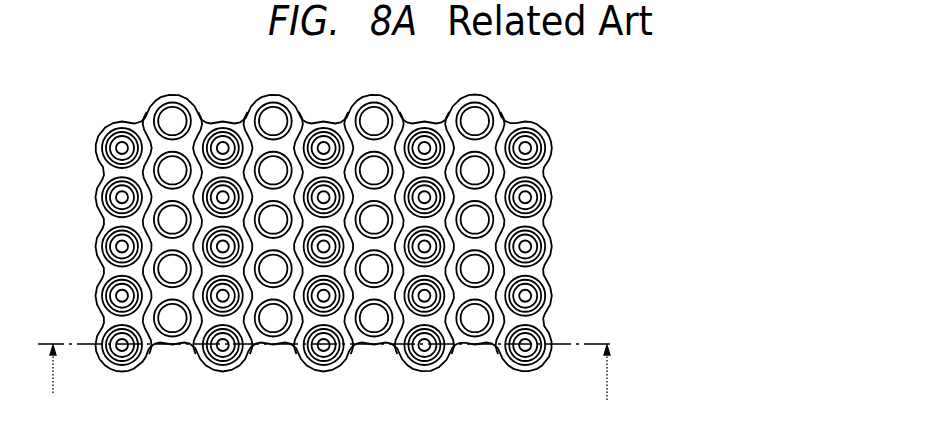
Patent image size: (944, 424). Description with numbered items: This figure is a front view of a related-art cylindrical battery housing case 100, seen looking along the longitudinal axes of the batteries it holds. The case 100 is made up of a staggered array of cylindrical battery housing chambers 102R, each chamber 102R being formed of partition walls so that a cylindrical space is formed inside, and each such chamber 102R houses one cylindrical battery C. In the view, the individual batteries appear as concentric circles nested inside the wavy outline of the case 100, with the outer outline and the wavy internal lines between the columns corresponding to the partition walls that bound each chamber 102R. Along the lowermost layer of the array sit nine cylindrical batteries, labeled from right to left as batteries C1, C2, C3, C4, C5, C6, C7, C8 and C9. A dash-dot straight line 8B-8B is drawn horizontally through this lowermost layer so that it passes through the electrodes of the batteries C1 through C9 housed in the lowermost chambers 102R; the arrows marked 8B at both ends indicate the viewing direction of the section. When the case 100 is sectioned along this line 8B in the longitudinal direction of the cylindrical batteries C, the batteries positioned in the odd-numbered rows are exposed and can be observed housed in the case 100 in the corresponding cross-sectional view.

The cylindrical battery housing case 100 is at (369, 242).
The cylindrical battery housing chamber 102R is at (540, 163).
The cylindrical battery C is at (523, 147).
The cylindrical battery C1 is at (537, 365).
The cylindrical battery C2 is at (473, 320).
The cylindrical battery C3 is at (432, 367).
The cylindrical battery C4 is at (369, 320).
The cylindrical battery C5 is at (330, 352).
The cylindrical battery C6 is at (272, 322).
The cylindrical battery C7 is at (231, 363).
The cylindrical battery C8 is at (168, 324).
The cylindrical battery C9 is at (130, 367).
The line 8B- 8B is at (327, 384).